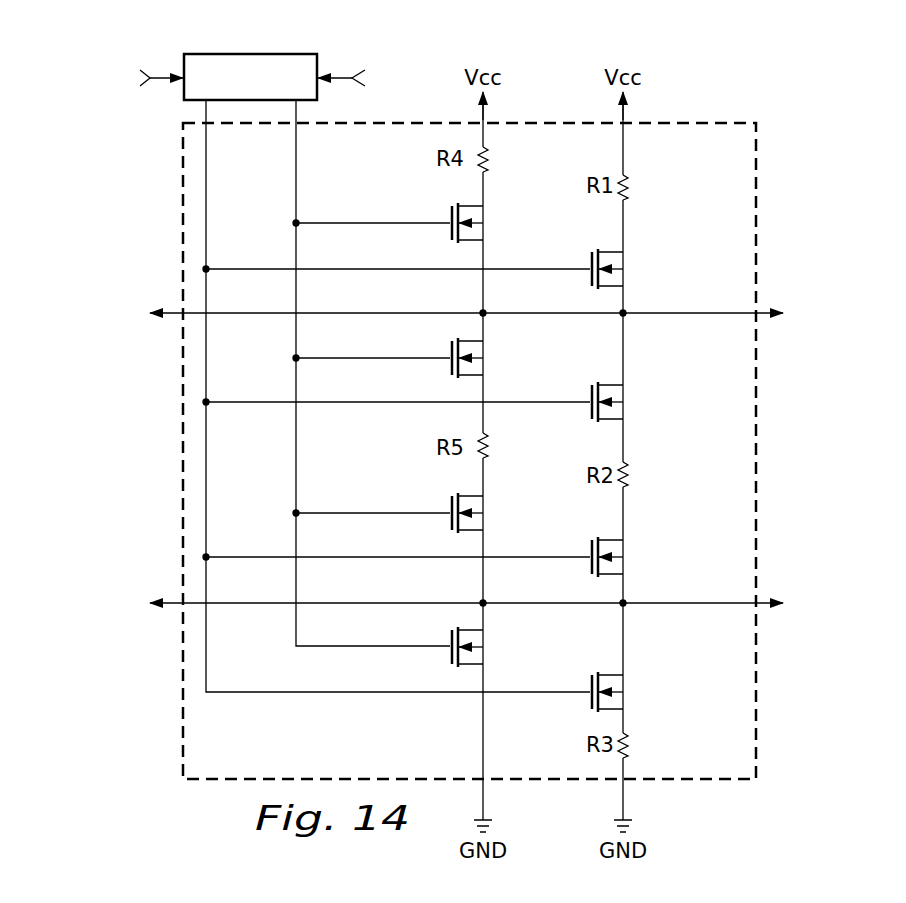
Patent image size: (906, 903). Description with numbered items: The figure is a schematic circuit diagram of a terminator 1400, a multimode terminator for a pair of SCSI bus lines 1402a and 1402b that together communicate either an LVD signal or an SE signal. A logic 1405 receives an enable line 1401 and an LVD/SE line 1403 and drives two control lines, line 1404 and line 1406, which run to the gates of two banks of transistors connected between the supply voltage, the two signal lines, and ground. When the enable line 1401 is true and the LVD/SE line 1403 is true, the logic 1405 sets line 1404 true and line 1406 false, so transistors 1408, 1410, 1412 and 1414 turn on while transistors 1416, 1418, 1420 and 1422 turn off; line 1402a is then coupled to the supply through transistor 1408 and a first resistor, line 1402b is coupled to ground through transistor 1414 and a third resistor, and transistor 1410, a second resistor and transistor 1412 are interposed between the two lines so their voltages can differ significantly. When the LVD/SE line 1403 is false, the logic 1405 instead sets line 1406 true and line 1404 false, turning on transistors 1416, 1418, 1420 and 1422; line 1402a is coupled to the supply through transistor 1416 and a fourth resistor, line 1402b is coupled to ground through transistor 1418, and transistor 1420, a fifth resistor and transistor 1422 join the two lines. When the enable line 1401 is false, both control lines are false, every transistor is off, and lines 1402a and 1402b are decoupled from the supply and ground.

The terminator 1400 is at (182, 462).
The enable line 1401 is at (402, 63).
The line 1402a is at (690, 320).
The line 1402b is at (690, 610).
The LVD/SE line 1403 is at (105, 60).
The line 1404 is at (322, 692).
The logic 1405 is at (250, 54).
The line 1406 is at (296, 447).
The transistor 1408 is at (592, 263).
The transistor 1410 is at (592, 412).
The transistor 1412 is at (592, 550).
The transistor 1414 is at (592, 702).
The transistor 1416 is at (452, 216).
The transistor 1418 is at (452, 656).
The transistor 1420 is at (452, 368).
The transistor 1422 is at (452, 505).